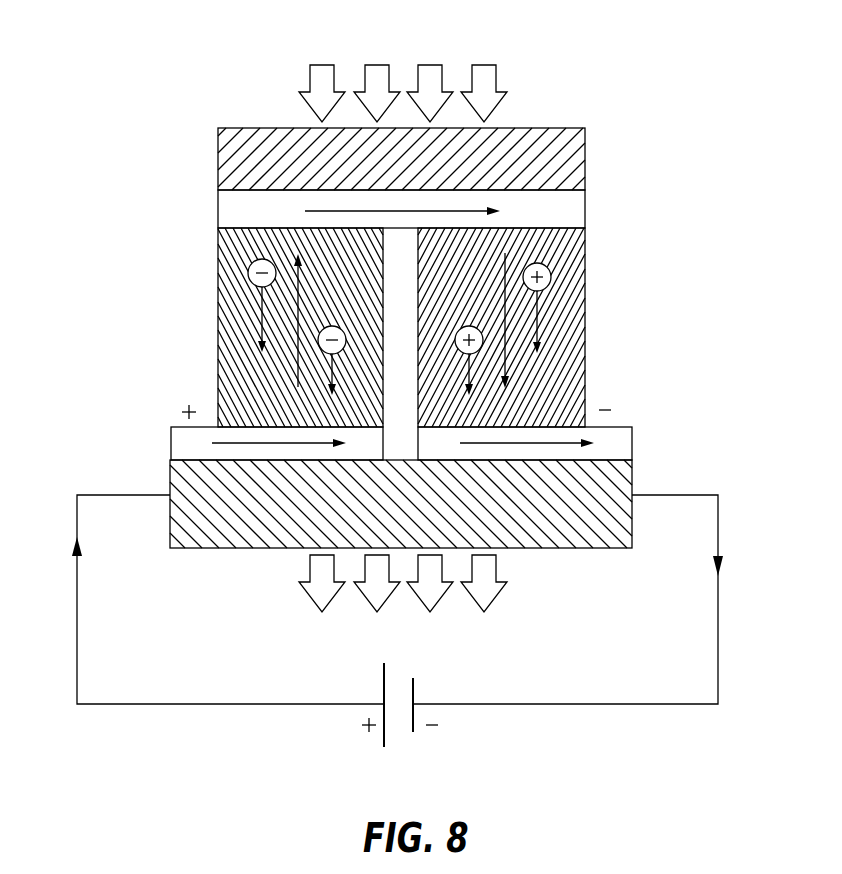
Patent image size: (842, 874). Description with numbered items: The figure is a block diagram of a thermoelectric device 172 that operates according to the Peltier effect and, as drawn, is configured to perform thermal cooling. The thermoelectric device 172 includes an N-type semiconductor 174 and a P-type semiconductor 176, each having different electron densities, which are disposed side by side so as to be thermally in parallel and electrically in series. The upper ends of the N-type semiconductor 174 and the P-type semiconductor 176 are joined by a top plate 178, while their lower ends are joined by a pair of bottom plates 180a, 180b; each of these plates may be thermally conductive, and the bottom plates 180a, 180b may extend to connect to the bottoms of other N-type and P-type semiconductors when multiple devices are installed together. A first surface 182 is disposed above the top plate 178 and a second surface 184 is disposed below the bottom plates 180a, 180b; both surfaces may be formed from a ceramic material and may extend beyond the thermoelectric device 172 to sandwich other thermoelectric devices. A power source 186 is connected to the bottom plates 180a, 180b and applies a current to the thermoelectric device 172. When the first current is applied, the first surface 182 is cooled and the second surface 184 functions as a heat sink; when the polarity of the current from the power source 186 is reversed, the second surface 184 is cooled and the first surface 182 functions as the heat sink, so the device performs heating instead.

The thermoelectric device 172 is at (581, 52).
The first surface 182 is at (237, 161).
The top plate 178 is at (575, 215).
The N-type semiconductor 174 is at (237, 368).
The P-type semiconductor 176 is at (565, 368).
The bottom plate 180a is at (178, 450).
The bottom plate 180b is at (625, 450).
The second surface 184 is at (227, 547).
The power source 186 is at (460, 718).